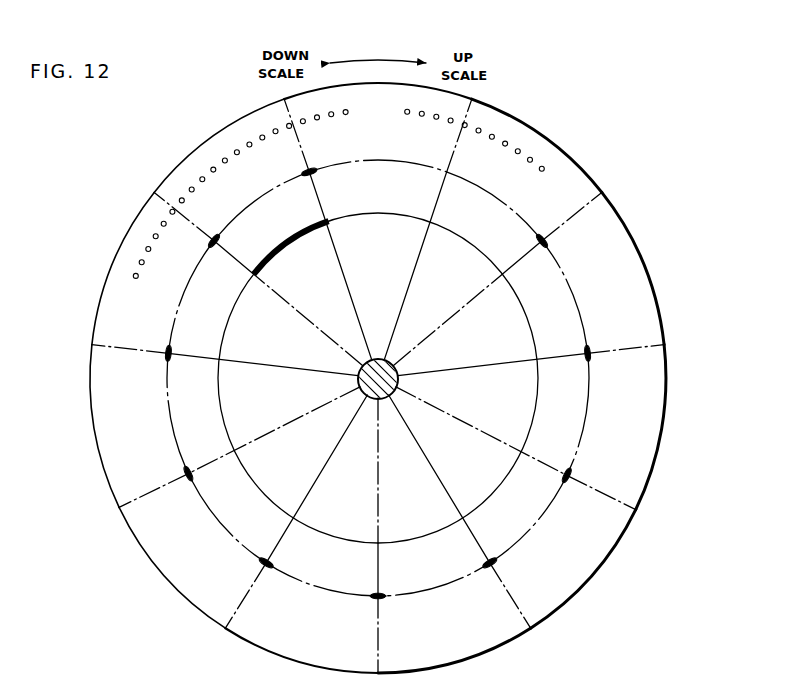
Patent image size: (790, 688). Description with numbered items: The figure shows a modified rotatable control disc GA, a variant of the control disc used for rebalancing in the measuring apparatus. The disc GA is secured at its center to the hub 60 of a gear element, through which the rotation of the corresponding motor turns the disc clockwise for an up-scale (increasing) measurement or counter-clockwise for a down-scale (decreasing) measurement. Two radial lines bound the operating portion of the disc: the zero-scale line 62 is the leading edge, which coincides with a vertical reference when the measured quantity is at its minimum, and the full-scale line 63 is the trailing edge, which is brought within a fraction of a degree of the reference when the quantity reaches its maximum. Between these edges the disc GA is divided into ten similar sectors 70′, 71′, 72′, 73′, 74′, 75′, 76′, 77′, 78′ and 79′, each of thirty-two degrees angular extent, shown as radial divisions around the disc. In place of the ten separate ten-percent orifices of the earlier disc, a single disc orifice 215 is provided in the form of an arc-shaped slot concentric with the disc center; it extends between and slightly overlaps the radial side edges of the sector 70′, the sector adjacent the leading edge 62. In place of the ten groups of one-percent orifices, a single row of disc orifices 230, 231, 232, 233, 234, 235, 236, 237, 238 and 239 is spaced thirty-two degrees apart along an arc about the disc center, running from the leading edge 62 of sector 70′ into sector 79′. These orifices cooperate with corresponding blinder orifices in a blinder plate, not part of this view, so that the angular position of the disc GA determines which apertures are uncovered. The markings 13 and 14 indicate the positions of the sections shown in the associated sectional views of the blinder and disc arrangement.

The hub 60 is at (390, 362).
The zero-scale line 62 is at (300, 155).
The full-scale line 63 is at (455, 149).
The inner ring position 13 is at (337, 221).
The outer ring position 14 is at (322, 168).
The disc orifice 215 is at (295, 243).
The disc orifice 230 is at (300, 171).
The disc orifice 231 is at (205, 249).
The disc orifice 232 is at (163, 358).
The disc orifice 233 is at (185, 483).
The disc orifice 234 is at (268, 568).
The disc orifice 235 is at (382, 599).
The disc orifice 236 is at (496, 563).
The disc orifice 237 is at (573, 472).
The disc orifice 238 is at (592, 350).
The disc orifice 239 is at (546, 238).
The sector 70' is at (219, 145).
The sector 71' is at (110, 268).
The sector 72' is at (78, 426).
The sector 73' is at (158, 567).
The sector 74' is at (301, 658).
The sector 75' is at (454, 658).
The sector 76' is at (584, 569).
The sector 77' is at (675, 427).
The sector 78' is at (647, 268).
The sector 79' is at (537, 145).
The disc GA is at (583, 176).